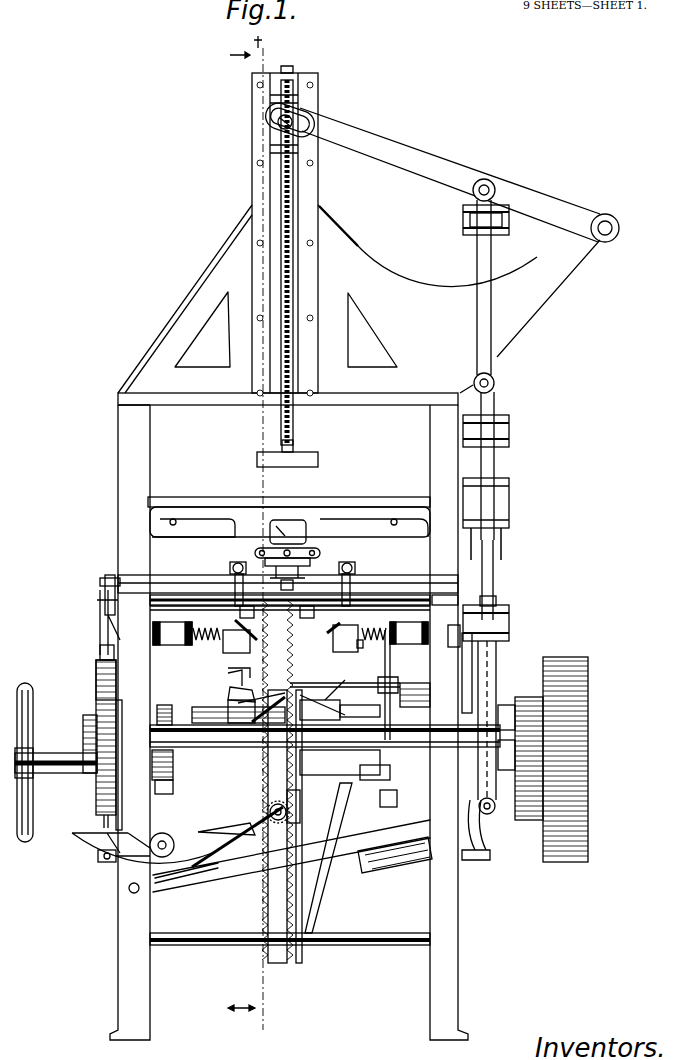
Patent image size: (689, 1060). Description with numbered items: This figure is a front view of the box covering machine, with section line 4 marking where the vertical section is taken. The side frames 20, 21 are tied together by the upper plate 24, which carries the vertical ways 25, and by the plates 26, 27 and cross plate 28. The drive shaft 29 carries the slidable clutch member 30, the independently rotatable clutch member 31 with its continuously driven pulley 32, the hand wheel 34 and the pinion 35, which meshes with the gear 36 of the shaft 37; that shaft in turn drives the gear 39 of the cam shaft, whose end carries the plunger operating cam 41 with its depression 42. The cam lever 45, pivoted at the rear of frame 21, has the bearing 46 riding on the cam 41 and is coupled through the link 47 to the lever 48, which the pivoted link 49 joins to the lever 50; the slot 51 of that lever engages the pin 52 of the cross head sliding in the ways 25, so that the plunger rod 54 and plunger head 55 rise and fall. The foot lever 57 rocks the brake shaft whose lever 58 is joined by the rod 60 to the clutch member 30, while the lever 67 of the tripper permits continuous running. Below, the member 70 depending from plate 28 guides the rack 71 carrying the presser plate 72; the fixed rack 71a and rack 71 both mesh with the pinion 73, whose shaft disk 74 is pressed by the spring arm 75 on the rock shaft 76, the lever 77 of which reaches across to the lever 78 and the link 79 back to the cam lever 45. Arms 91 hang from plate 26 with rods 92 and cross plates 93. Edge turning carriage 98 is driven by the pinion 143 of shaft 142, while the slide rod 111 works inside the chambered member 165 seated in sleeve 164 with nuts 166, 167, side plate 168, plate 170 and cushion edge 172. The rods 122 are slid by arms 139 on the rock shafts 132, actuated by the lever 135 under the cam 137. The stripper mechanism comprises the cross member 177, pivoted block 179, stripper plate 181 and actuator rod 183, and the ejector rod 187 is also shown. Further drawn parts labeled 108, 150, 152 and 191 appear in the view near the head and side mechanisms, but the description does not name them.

The section line 4— 4 is at (247, 530).
The side frame 20 is at (118, 958).
The side frame 21 is at (458, 910).
The upper plate 24 is at (197, 398).
The vertical ways 25 is at (318, 104).
The plate 26 is at (395, 507).
The plate 27 is at (425, 583).
The cross plate 28 is at (155, 785).
The drive shaft 29 is at (62, 753).
The slidable clutch member 30 is at (505, 770).
The independently rotatable clutch member 31 is at (543, 752).
The drive pulley 32 is at (588, 672).
The hand wheel 34 is at (28, 684).
The pinion 35 is at (152, 754).
The gear 36 is at (166, 705).
The shaft 37 is at (200, 748).
The gear 39 is at (96, 795).
The plunger operating cam 41 is at (496, 690).
The depression 42 is at (494, 670).
The cam lever 45 is at (496, 600).
The bearing 46 is at (509, 612).
The link 47 is at (494, 558).
The lever 48 is at (495, 453).
The pivoted link 49 is at (495, 312).
The lever 50 is at (405, 156).
The slot 51 is at (312, 122).
The pin 52 is at (272, 128).
The plunger rod 54 is at (293, 428).
The plunger head 55 is at (318, 459).
The foot lever 57 is at (136, 862).
The lever 58 is at (160, 833).
The rod 60 is at (180, 832).
The lever 67 is at (210, 830).
The member 70 is at (318, 893).
The rack 71 is at (304, 526).
The fixed rack 71a is at (268, 900).
The presser plate 72 is at (318, 498).
The pinion 73 is at (300, 803).
The disk 74 is at (267, 812).
The spring arm 75 is at (237, 837).
The rock shaft 76 is at (129, 889).
The lever 77 is at (348, 855).
The lever 78 is at (476, 822).
The link 79 is at (466, 670).
The arm 91 is at (325, 532).
The rod 92 is at (310, 560).
The cross plate 93 is at (320, 549).
The edge turning carriage 98 is at (293, 585).
The boss 108 is at (282, 527).
The slide rod 111 is at (282, 559).
The slidable rod 122 is at (355, 568).
The rock shaft 132 is at (175, 595).
The lever 135 is at (114, 655).
The cam 137 is at (116, 672).
The arm 139 is at (350, 583).
The shaft 142 is at (243, 616).
The pinion 143 is at (313, 617).
The bracket post 150 is at (145, 582).
The rail end 152 is at (449, 605).
The sleeve 164 is at (410, 645).
The screw threaded chambered member 165 is at (370, 649).
The adjusting nut 166 is at (192, 638).
The securing nut 167 is at (445, 635).
The side plate 168 is at (220, 675).
The plate 170 is at (258, 640).
The cushion edge 172 is at (340, 648).
The cross member 177 is at (232, 707).
The pivoted block 179 is at (229, 693).
The adjustable stripper plate 181 is at (314, 682).
The actuator rod 183 is at (261, 703).
The rod 187 is at (386, 798).
The post 191 is at (365, 685).